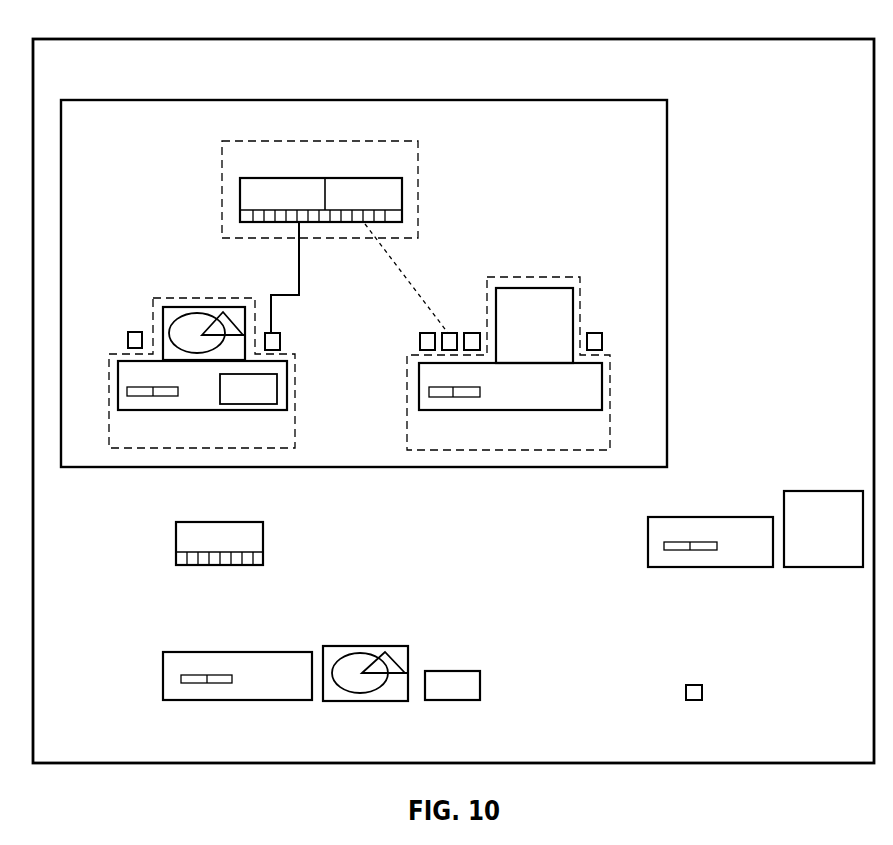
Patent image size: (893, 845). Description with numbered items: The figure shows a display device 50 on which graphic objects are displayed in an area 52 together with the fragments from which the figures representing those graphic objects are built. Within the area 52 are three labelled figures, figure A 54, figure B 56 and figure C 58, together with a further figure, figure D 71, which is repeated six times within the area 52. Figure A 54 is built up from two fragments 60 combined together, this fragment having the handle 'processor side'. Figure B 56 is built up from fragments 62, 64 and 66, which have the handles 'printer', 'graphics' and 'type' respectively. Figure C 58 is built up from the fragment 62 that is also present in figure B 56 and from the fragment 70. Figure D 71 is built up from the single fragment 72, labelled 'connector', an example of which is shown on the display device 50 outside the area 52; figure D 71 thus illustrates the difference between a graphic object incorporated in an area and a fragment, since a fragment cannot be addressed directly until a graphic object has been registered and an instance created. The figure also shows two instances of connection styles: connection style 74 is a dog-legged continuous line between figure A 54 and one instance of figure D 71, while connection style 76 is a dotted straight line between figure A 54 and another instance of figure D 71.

The display device 50 is at (735, 38).
The area 52 is at (247, 99).
The figure A 54 is at (418, 164).
The figure B 56 is at (297, 388).
The figure C 58 is at (526, 276).
The fragment 60 is at (243, 522).
The fragment 62 is at (720, 517).
The fragment 64 is at (375, 646).
The fragment 66 is at (463, 671).
The fragment 70 is at (812, 491).
The figure D 71 is at (135, 332).
The fragment 72 is at (694, 685).
The connection style 74 is at (300, 285).
The connection style 76 is at (407, 276).